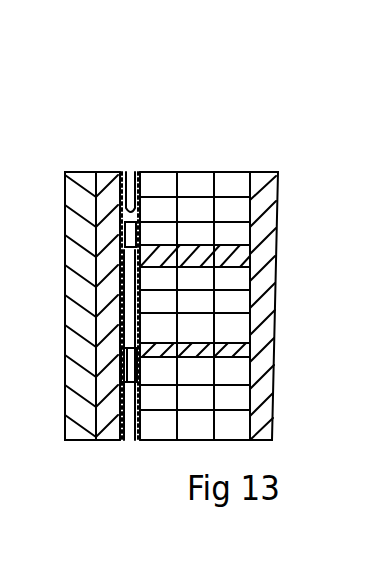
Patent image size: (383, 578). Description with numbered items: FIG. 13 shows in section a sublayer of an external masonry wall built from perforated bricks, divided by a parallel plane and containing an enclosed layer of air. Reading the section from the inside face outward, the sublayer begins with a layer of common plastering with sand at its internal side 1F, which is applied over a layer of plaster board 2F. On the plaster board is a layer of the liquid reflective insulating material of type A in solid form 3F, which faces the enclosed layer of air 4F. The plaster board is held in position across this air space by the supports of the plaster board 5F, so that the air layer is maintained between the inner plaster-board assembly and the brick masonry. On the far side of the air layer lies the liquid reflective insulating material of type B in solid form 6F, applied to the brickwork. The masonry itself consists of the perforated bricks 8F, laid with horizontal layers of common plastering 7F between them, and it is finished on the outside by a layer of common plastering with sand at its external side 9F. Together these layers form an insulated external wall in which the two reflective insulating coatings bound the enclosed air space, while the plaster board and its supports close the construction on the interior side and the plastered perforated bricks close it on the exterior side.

The layer of common plastering with sand at internal side 1F is at (74, 186).
The layer of plaster board 2F is at (100, 185).
The liquid reflective insulating material type A in solid form 3F is at (125, 182).
The enclosed layer of air 4F is at (132, 176).
The supports of the plaster board 5F is at (122, 390).
The liquid reflective insulating material type B in solid form 6F is at (143, 176).
The horizontal layers of common plastering 7F is at (180, 247).
The perforated bricks 8F is at (240, 174).
The layer of common plastering with sand at external side 9F is at (270, 175).